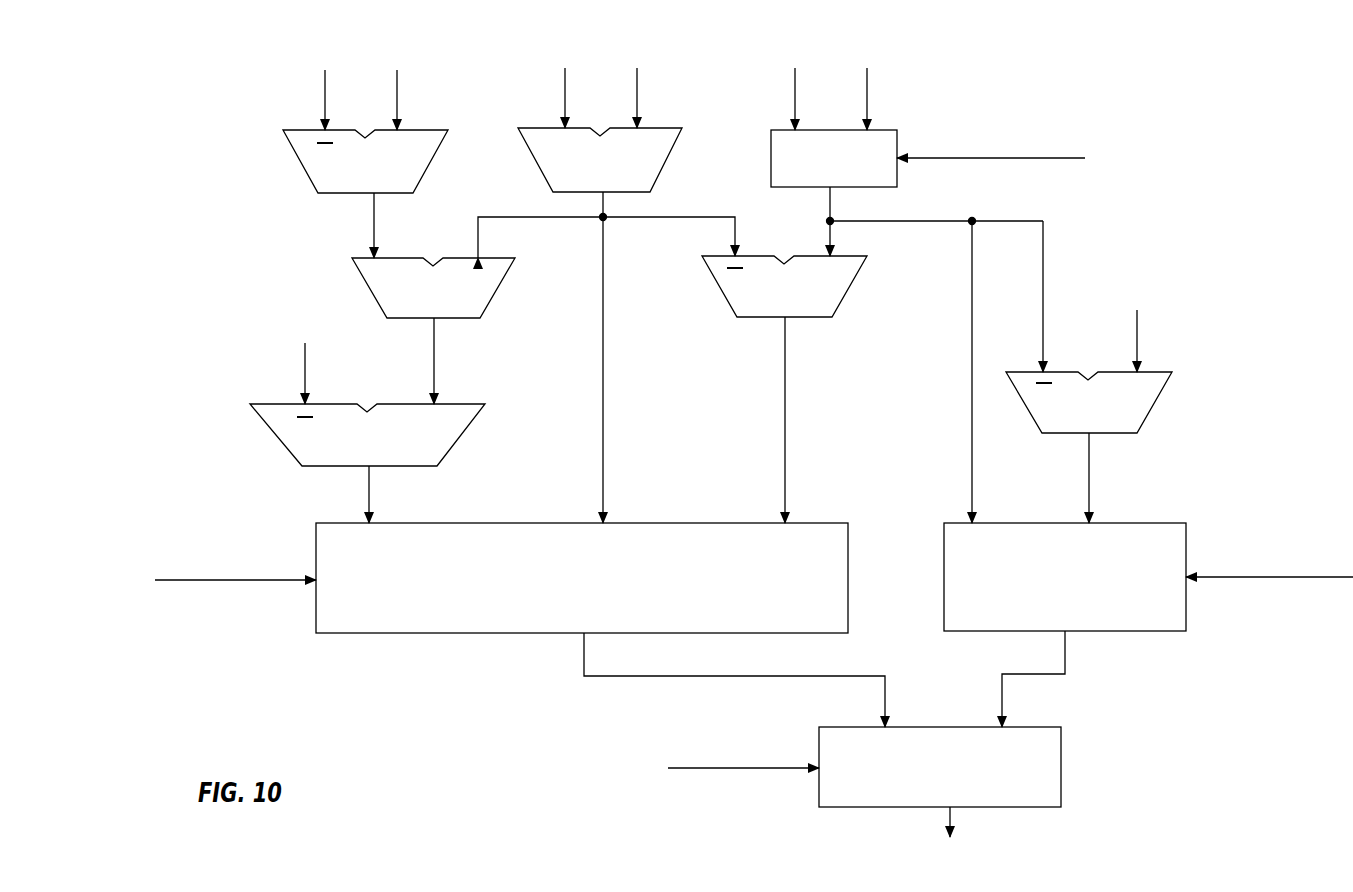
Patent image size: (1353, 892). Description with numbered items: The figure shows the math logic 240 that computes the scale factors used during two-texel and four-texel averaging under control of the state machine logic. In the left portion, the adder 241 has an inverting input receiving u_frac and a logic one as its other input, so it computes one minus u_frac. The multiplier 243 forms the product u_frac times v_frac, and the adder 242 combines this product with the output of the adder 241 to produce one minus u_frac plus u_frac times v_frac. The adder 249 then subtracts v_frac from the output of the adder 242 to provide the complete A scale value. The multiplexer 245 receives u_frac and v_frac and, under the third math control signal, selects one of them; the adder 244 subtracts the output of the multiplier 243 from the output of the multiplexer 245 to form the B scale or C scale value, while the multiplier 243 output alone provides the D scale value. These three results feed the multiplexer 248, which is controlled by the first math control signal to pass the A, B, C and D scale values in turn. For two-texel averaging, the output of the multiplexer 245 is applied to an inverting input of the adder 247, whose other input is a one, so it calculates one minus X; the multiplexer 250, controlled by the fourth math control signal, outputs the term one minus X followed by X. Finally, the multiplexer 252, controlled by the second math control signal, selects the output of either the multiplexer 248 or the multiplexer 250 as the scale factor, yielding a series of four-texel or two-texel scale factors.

The math logic 240 is at (1128, 102).
The adder 241 is at (342, 146).
The adder 242 is at (433, 331).
The multiplier 243 is at (604, 278).
The adder 244 is at (767, 389).
The multiplexer 245 is at (896, 278).
The adder 247 is at (1083, 400).
The multiplexer 248 is at (520, 625).
The adder 249 is at (352, 415).
The multiplexer 250 is at (1117, 625).
The multiplexer 252 is at (855, 809).